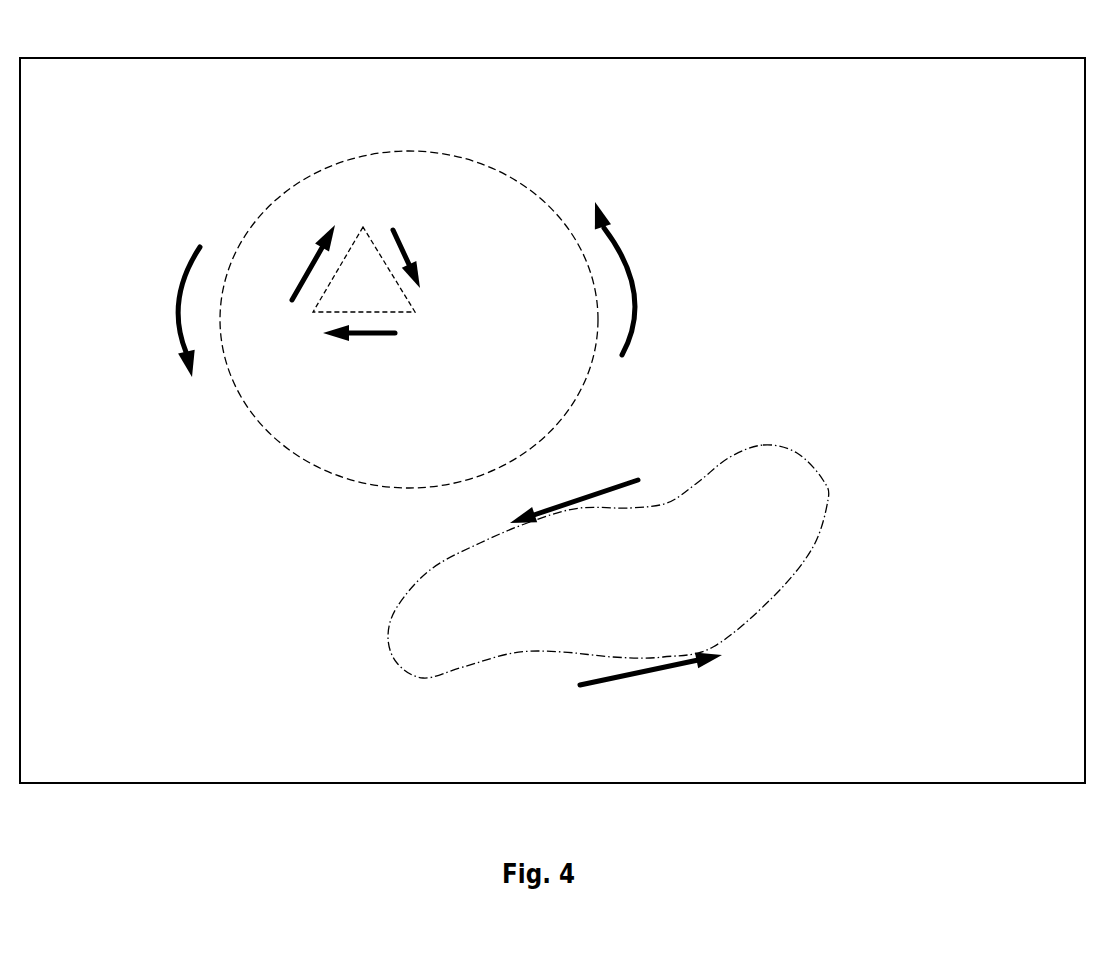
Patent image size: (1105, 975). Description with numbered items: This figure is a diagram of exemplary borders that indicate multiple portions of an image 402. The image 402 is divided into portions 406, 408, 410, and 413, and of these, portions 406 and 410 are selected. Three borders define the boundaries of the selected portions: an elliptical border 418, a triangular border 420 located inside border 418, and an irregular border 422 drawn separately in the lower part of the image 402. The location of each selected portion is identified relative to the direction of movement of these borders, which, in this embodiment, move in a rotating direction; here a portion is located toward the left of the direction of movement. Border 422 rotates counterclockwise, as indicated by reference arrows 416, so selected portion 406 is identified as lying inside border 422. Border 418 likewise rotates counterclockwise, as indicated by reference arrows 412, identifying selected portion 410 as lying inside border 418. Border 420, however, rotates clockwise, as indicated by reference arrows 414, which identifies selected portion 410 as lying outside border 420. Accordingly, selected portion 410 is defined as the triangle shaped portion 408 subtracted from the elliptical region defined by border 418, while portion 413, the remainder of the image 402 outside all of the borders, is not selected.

The image 402 is at (571, 57).
The portion 406 is at (623, 572).
The triangle shaped portion 408 is at (378, 294).
The portion 410 is at (481, 400).
The reference arrows 412 is at (178, 312).
The portion 413 is at (862, 290).
The reference arrows 414 is at (307, 270).
The reference arrows 416 is at (613, 483).
The border 418 is at (408, 150).
The border 420 is at (363, 228).
The border 422 is at (782, 452).